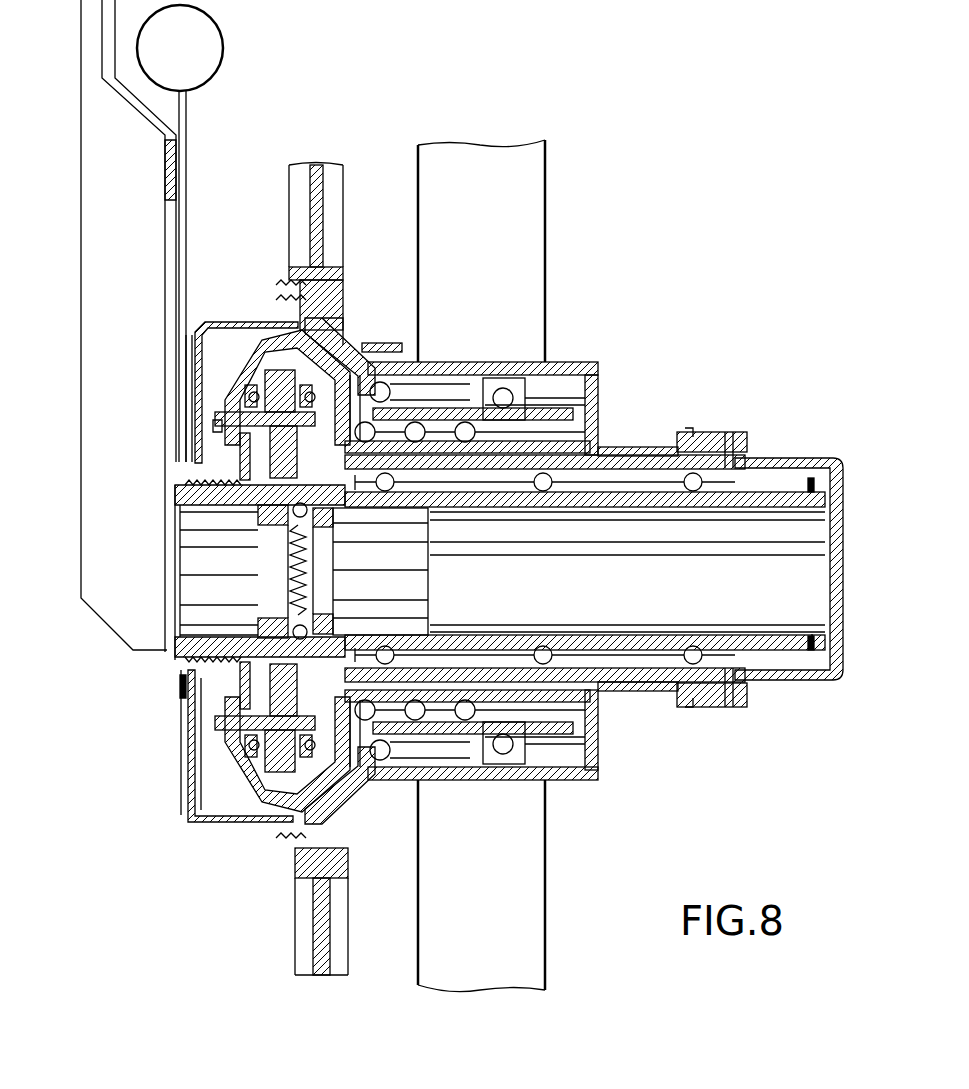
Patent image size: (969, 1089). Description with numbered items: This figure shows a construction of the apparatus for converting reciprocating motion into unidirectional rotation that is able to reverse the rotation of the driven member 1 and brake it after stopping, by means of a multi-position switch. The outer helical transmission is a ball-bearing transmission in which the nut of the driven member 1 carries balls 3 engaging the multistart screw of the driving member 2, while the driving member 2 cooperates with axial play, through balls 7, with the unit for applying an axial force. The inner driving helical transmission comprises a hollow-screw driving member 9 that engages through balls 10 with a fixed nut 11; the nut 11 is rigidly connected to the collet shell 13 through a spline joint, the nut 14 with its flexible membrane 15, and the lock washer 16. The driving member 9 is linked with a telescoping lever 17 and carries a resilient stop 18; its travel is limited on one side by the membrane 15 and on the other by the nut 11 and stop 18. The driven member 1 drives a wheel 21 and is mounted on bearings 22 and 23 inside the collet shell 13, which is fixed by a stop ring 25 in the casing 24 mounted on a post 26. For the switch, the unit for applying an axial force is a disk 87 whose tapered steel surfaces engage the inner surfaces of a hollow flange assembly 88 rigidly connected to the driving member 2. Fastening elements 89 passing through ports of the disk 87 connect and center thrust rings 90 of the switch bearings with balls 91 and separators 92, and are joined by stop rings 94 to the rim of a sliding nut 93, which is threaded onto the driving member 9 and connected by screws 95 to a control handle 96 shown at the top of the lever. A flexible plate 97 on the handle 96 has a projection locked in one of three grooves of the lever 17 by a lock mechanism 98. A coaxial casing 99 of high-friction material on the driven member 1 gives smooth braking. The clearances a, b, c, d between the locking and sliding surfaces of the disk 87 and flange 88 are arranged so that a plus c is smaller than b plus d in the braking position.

The driven member 1 is at (345, 812).
The driving member 2 is at (505, 680).
The balls 3 is at (478, 680).
The balls 7 is at (370, 515).
The driving member 9 is at (783, 490).
The balls 10 is at (692, 648).
The fixed nut 11 is at (612, 455).
The collet shell 13 is at (635, 455).
The nut 14 is at (740, 450).
The flexible membrane 15 is at (838, 582).
The lock washer 16 is at (687, 708).
The telescoping lever 17 is at (90, 173).
The stop 18 is at (812, 638).
The wheel 21 is at (300, 918).
The bearing 22 is at (385, 343).
The bearing 23 is at (500, 385).
The casing 24 is at (580, 362).
The stop ring 25 is at (603, 372).
The post 26 is at (528, 190).
The unit for applying an axial force 87 is at (245, 637).
The hollow flange assembly 88 is at (240, 828).
The fastening elements 89 is at (235, 742).
The thrust rings 90 is at (235, 770).
The balls 91 is at (215, 388).
The separators 92 is at (165, 357).
The sliding nut 93 is at (225, 710).
The stop rings 94 is at (172, 441).
The screws 95 is at (178, 686).
The knob 96 is at (212, 40).
The flexible plate 97 is at (190, 112).
The lock mechanism 98 is at (275, 555).
The coaxial casing 99 is at (222, 322).
The clearance a is at (252, 352).
The clearance b is at (200, 408).
The clearance c is at (340, 312).
The clearance d is at (342, 332).